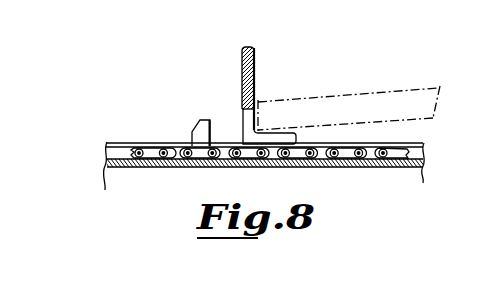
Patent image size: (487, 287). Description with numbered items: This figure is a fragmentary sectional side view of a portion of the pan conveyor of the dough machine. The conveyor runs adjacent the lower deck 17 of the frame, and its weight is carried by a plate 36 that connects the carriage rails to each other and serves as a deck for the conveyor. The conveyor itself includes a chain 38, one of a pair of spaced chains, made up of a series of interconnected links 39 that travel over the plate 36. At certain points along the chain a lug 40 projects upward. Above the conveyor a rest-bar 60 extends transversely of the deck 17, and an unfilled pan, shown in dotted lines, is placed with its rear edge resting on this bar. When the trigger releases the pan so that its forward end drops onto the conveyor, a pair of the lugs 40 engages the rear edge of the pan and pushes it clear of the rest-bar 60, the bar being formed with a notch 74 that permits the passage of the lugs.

The lower deck 17 is at (126, 174).
The plate 36 is at (395, 166).
The chain 38 is at (398, 149).
The link 39 is at (286, 158).
The lug 40 is at (204, 120).
The rest-bar 60 is at (246, 47).
The notch 74 is at (242, 115).